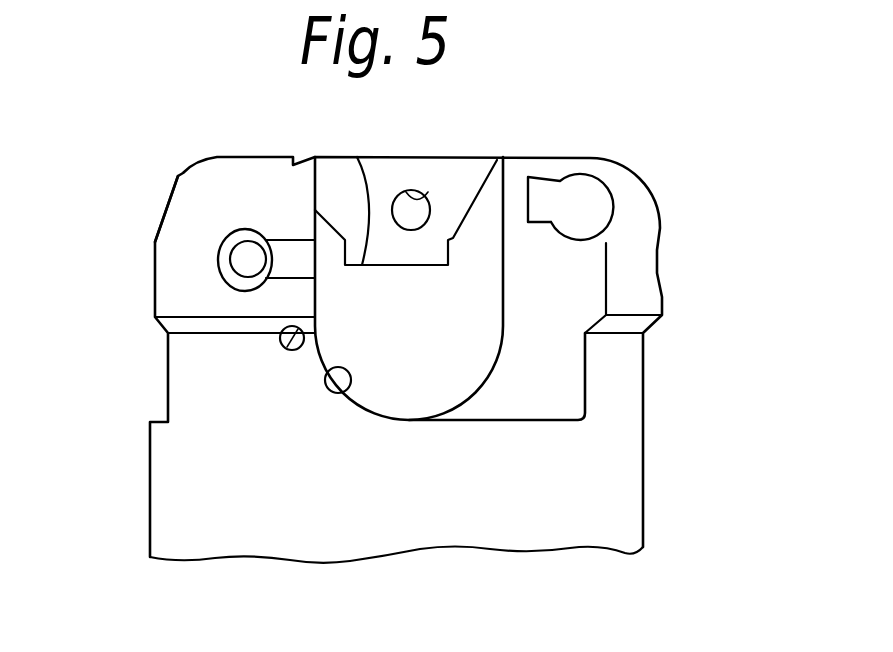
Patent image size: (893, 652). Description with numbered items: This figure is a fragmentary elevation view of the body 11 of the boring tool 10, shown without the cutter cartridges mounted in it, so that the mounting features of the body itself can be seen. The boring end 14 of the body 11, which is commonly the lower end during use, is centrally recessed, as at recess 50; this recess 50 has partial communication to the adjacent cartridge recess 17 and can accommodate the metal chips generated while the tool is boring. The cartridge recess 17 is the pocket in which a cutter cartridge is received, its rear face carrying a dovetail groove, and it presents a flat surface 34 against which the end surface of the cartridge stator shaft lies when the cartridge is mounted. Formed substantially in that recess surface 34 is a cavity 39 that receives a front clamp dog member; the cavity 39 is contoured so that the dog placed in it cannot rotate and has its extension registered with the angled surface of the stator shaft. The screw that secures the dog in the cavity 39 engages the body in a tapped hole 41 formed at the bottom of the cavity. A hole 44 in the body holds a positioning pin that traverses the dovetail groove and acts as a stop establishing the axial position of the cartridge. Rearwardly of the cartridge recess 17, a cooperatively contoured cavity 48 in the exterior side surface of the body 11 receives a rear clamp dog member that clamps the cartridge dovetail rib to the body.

The boring tool 10 is at (710, 352).
The body 11 is at (642, 497).
The boring end 14 is at (525, 160).
The recess 17 is at (352, 393).
The flat surface 34 is at (580, 262).
The cavity 39 is at (596, 198).
The tapped hole 41 is at (420, 190).
The hole 44 is at (283, 341).
The cavity 48 is at (227, 260).
The recess 50 is at (357, 157).